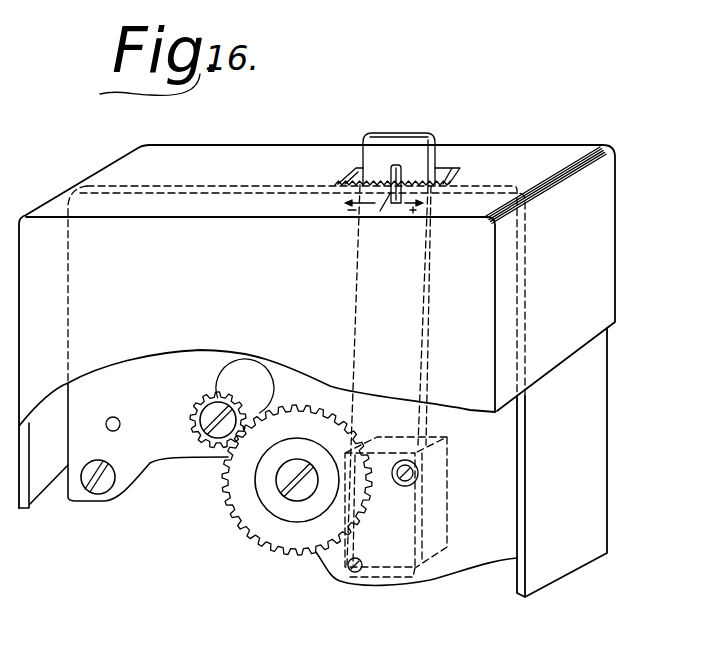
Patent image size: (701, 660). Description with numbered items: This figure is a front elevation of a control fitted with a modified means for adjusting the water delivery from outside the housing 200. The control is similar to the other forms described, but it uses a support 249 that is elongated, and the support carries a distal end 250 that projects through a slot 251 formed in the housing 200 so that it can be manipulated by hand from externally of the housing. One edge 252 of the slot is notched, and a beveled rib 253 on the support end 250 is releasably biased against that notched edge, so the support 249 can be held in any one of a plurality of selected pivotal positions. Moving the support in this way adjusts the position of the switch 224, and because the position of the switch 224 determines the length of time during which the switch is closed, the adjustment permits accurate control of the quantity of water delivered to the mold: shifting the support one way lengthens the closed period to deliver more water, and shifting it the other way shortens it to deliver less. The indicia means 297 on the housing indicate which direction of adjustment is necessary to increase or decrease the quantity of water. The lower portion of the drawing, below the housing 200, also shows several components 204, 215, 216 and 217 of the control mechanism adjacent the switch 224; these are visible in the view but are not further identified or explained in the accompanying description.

The housing 200 is at (605, 228).
The indicia means 297 is at (334, 203).
The edge of the slot 252 is at (356, 170).
The beveled rib 253 is at (393, 165).
The distal end 250 is at (410, 145).
The slot 251 is at (446, 172).
The support 249 is at (430, 308).
The drum 204 is at (243, 372).
The pinion gear 216 is at (192, 410).
The mounting plate 215 is at (145, 458).
The drive gear 217 is at (240, 520).
The switch 224 is at (437, 512).